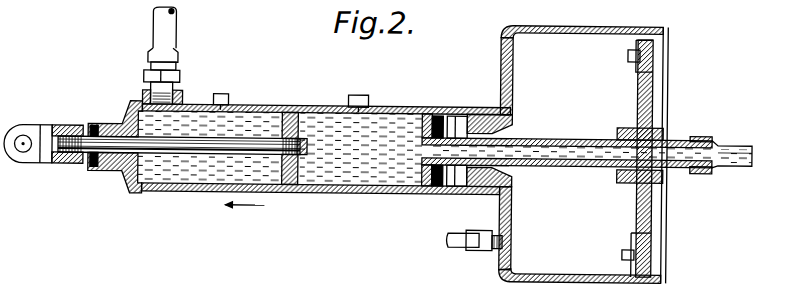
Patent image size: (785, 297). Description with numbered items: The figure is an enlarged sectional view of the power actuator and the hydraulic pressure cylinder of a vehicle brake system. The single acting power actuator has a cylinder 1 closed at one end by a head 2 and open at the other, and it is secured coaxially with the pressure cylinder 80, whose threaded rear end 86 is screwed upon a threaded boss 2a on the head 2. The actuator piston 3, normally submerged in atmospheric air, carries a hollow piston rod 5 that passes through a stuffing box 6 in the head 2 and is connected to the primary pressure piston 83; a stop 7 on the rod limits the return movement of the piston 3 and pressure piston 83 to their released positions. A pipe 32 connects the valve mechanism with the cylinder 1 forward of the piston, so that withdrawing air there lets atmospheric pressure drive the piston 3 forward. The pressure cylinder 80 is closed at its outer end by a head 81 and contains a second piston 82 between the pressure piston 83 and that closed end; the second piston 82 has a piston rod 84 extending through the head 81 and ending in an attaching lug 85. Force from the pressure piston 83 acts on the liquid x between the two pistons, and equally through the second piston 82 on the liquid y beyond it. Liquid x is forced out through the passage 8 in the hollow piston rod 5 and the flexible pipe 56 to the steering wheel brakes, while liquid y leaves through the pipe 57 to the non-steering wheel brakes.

The actuator cylinder 1 is at (578, 25).
The head 2 is at (505, 59).
The threaded boss 2a is at (484, 110).
The actuator piston 3 is at (637, 100).
The hollow piston rod 5 is at (546, 138).
The stuffing box 6 is at (507, 177).
The stop 7 is at (456, 107).
The bore or passage 8 is at (602, 157).
The pipe 32 is at (471, 249).
The pipe 56 is at (732, 145).
The pipe 57 is at (158, 27).
The pressure cylinder 80 is at (283, 113).
The head 81 is at (122, 175).
The second piston 82 is at (283, 195).
The pressure piston 83 is at (428, 107).
The piston rod 84 is at (178, 153).
The attaching lug 85 is at (30, 131).
The threaded rear end 86 is at (477, 196).
The liquid x is at (351, 195).
The liquid y is at (222, 189).